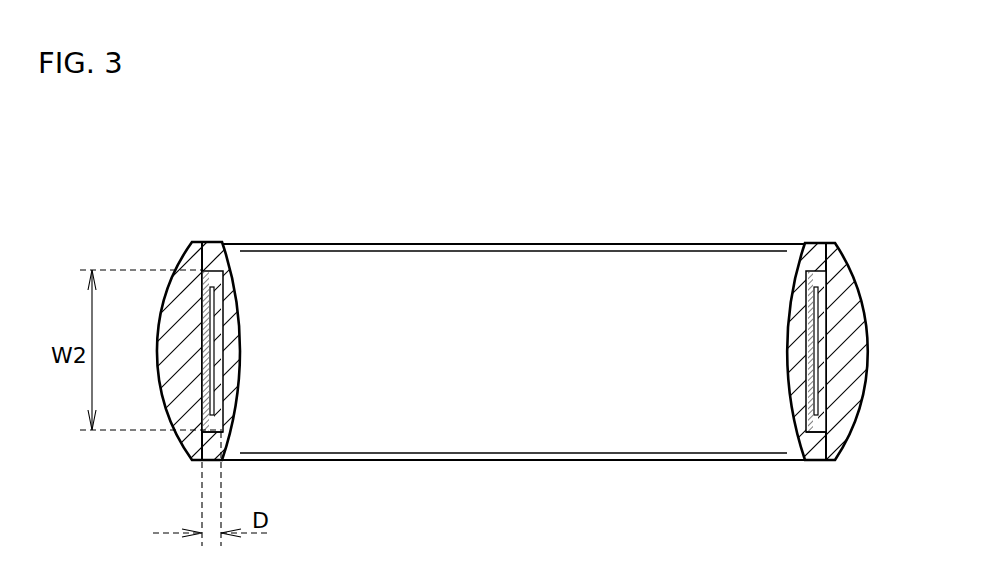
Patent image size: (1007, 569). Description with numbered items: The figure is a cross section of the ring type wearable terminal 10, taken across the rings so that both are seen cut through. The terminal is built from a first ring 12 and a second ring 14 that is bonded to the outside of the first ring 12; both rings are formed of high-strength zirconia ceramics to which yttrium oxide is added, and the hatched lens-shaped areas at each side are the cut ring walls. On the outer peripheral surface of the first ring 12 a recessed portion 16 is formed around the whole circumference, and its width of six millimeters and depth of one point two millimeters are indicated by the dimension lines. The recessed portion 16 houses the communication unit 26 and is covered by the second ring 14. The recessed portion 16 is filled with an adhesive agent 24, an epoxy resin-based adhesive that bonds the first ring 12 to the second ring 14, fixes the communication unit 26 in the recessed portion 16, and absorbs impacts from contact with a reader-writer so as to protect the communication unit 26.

The ring type wearable terminal 10 is at (146, 130).
The first ring 12 is at (240, 328).
The second ring 14 is at (158, 346).
The recessed portion 16 is at (220, 273).
The adhesive agent 24 is at (222, 430).
The communication unit 26 is at (214, 378).